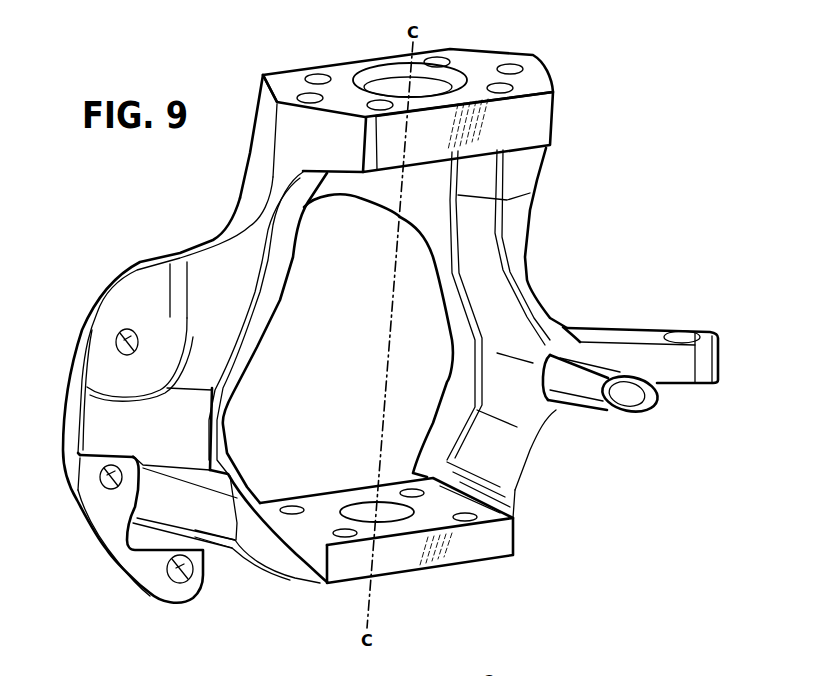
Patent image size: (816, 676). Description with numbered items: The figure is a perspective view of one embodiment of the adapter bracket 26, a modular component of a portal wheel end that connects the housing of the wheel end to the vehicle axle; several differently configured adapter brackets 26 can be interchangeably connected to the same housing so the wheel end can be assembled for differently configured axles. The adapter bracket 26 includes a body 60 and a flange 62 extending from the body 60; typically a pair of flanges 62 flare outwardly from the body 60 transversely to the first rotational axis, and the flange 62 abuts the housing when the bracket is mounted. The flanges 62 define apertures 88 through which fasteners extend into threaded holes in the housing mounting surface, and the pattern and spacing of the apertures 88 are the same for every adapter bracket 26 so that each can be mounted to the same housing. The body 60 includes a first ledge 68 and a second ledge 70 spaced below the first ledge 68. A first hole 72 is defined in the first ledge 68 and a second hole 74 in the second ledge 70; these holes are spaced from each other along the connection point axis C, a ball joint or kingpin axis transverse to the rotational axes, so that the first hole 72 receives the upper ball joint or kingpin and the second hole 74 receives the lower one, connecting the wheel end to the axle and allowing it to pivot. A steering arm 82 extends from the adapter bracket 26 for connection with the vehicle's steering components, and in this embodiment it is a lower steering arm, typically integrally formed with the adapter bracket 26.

The adapter bracket 26 is at (543, 130).
The body 60 is at (517, 225).
The flange 62 is at (70, 412).
The first ledge 68 is at (550, 102).
The second ledge 70 is at (500, 540).
The first hole 72 is at (428, 84).
The second hole 74 is at (365, 508).
The steering arm 82 is at (713, 360).
The apertures 88 is at (127, 342).